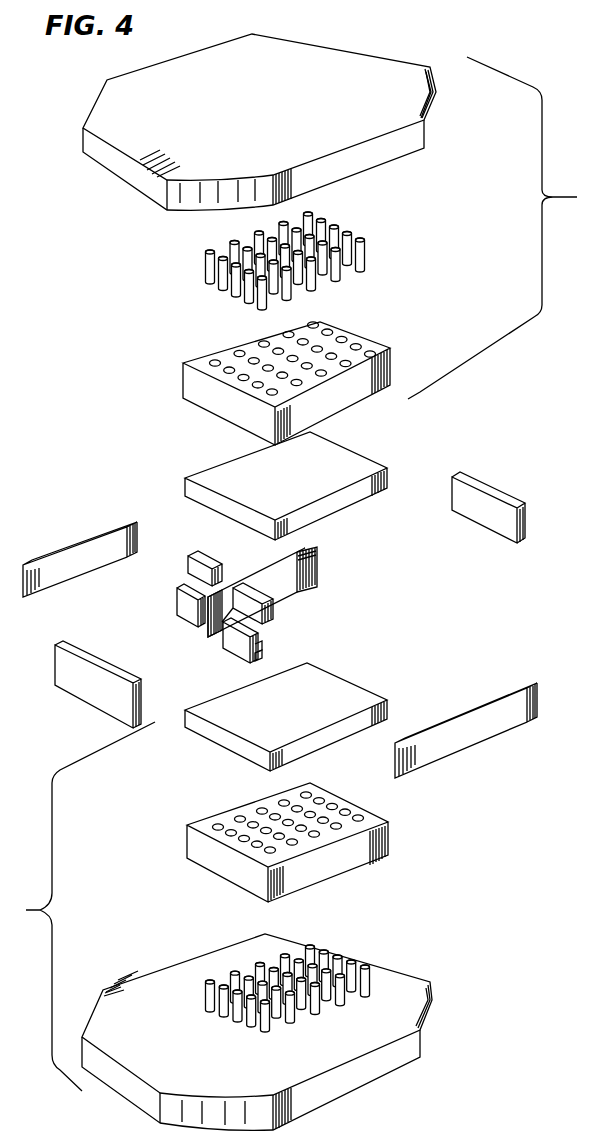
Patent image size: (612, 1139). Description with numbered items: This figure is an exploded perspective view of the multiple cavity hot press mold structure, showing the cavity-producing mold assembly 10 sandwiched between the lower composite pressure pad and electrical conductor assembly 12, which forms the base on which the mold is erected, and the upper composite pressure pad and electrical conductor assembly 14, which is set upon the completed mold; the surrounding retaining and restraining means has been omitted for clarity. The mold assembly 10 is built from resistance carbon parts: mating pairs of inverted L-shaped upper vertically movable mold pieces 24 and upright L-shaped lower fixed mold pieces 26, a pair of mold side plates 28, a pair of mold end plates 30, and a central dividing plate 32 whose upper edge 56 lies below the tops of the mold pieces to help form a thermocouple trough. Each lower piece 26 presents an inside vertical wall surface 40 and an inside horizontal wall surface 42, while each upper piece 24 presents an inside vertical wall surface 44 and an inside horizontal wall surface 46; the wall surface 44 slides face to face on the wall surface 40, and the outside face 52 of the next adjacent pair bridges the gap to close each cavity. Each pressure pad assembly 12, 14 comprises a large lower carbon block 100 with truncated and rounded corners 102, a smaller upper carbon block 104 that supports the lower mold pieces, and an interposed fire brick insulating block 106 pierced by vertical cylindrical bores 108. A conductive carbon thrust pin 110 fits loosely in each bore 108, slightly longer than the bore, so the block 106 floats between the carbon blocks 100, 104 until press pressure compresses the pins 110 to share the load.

The mold assembly 10 is at (127, 592).
The lower composite pressure pad and electrical conductor assembly 12 is at (78, 906).
The upper composite pressure pad and electrical conductor assembly 14 is at (507, 228).
The upper vertically movable mold piece 24 is at (246, 586).
The lower fixed mold piece 26 is at (260, 662).
The mold side plate 28 is at (72, 548).
The mold end plate 30 is at (72, 683).
The central dividing plate 32 is at (297, 587).
The inside planar vertical wall surface 40 is at (258, 643).
The inside planar horizontal wall surface 42 is at (259, 655).
The inside vertical planar wall surface 44 is at (200, 578).
The inside horizontal wall surface 46 is at (188, 562).
The outside face 52 is at (235, 645).
The upper edge 56 is at (300, 552).
The lower carbon block 100 is at (390, 65).
The truncated and rounded corner 102 is at (425, 119).
The upper carbon block 104 is at (338, 458).
The fire brick insulating block 106 is at (340, 408).
The vertical cylindrical bore 108 is at (235, 354).
The conductive carbon thrust pin 110 is at (358, 232).